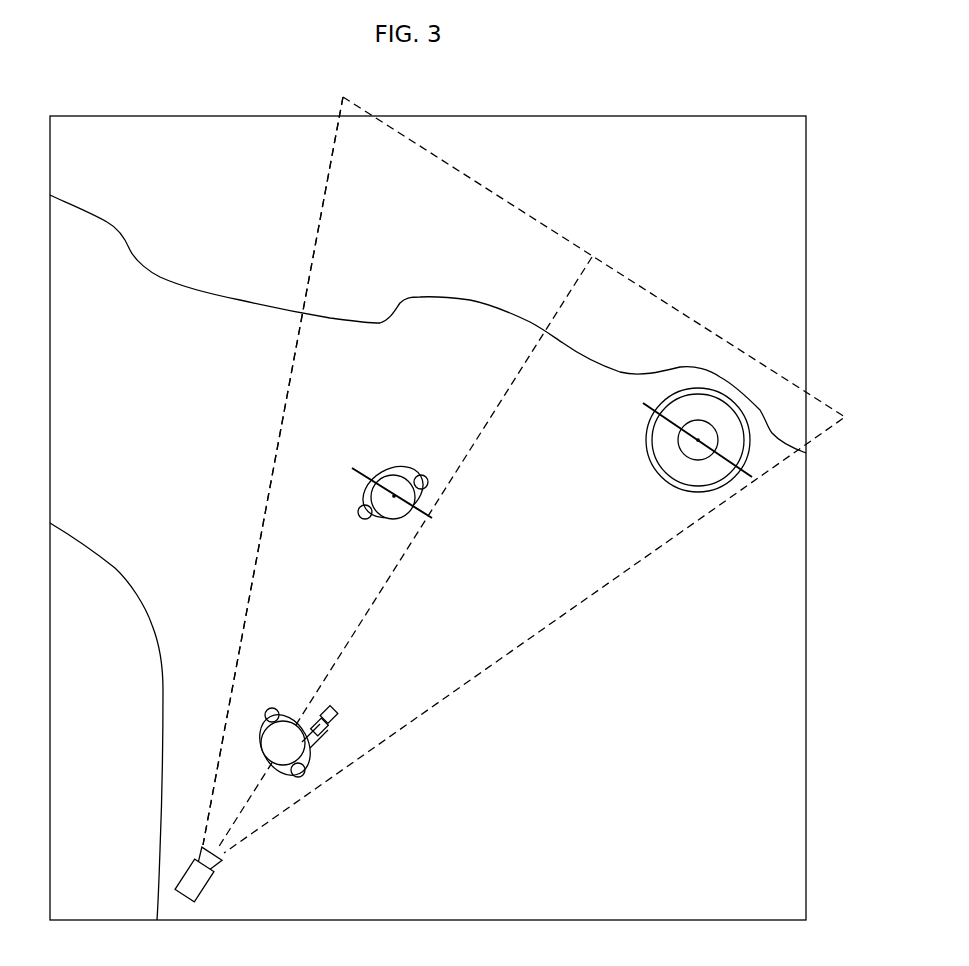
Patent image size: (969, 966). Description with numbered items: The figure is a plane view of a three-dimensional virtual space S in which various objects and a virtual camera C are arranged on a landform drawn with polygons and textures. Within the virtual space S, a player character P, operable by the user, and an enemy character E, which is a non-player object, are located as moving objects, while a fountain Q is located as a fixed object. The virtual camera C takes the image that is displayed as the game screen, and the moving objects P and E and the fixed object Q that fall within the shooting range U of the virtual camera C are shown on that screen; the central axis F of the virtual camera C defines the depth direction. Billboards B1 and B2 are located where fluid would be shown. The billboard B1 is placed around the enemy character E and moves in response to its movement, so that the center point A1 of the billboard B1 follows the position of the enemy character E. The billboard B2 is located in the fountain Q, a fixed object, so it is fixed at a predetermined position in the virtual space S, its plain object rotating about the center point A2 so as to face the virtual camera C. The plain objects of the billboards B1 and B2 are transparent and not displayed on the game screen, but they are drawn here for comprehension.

The three-dimensional virtual space S is at (428, 518).
The shooting range U is at (583, 603).
The central axis F is at (372, 612).
The virtual camera C is at (214, 878).
The player character P is at (259, 722).
The enemy character E is at (408, 458).
The center point A1 is at (394, 496).
The billboard B1 is at (360, 478).
The fountain Q is at (716, 492).
The center point A2 is at (697, 443).
The billboard B2 is at (647, 408).